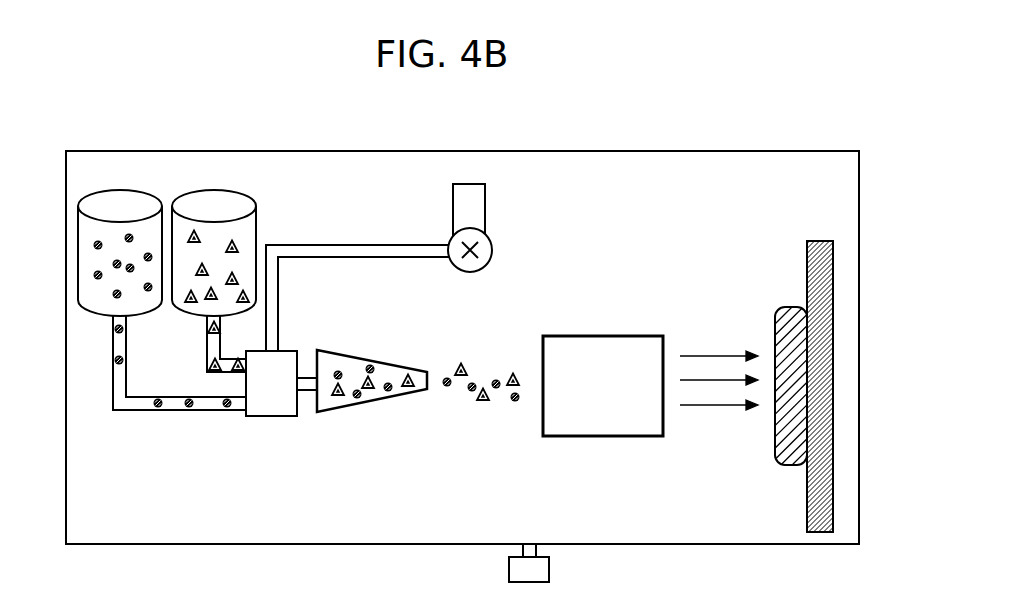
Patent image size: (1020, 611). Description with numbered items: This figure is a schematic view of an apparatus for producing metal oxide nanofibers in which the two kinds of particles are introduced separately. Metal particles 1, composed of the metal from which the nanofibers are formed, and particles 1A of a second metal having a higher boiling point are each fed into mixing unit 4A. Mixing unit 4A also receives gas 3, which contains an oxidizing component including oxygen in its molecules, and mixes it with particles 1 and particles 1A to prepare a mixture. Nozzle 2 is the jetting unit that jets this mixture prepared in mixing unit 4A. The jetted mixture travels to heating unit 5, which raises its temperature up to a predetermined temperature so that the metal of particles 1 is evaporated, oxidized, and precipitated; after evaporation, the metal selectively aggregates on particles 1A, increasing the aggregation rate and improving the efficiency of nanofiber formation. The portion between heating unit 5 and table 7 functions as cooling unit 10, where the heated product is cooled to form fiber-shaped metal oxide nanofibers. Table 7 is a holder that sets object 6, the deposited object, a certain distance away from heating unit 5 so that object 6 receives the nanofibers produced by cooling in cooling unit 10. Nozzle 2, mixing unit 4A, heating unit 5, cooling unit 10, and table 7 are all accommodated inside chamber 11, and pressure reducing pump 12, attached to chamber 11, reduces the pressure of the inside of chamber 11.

The metal particles 1 is at (131, 235).
The particles of a second metal 1A is at (234, 243).
The nozzle 2 is at (375, 395).
The gas 3 is at (493, 248).
The mixing unit 4A is at (270, 417).
The heating unit 5 is at (602, 348).
The object 6 is at (795, 312).
The table 7 is at (820, 248).
The cooling unit 10 is at (770, 441).
The chamber 11 is at (680, 149).
The pressure reducing pump 12 is at (540, 570).